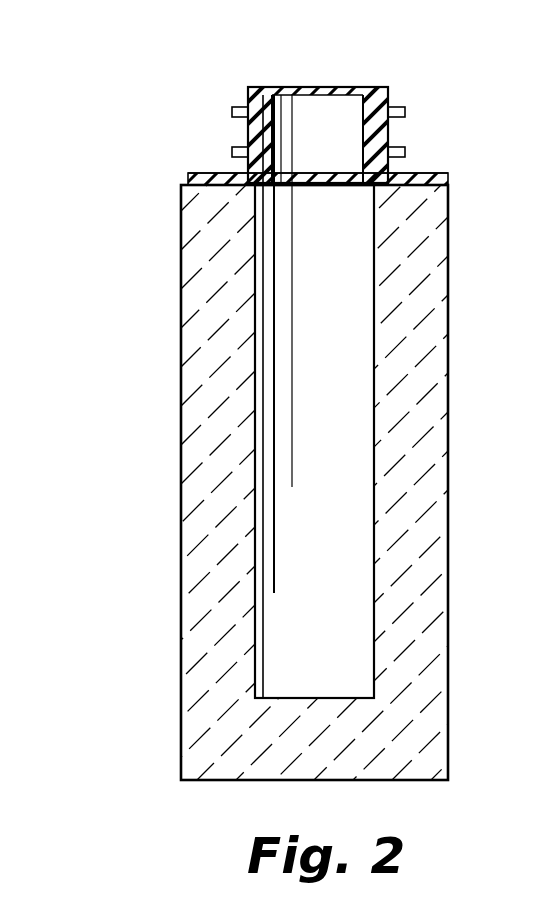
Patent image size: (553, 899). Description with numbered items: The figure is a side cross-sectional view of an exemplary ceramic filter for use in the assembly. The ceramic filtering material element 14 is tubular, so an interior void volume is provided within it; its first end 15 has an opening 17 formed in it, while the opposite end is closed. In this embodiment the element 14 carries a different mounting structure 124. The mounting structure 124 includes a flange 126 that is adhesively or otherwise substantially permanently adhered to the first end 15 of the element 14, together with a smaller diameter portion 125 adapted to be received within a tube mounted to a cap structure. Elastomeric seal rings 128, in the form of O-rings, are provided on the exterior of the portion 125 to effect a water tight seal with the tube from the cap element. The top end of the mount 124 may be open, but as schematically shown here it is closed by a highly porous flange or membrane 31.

The ceramic filtering material element 14 is at (213, 567).
The first end 15 is at (210, 174).
The opening 17 is at (345, 462).
The highly porous flange or membrane 31 is at (308, 86).
The mounting structure 124 is at (345, 112).
The smaller diameter portion 125 is at (372, 135).
The flange 126 is at (420, 176).
The elastomeric seal rings 128 is at (232, 148).